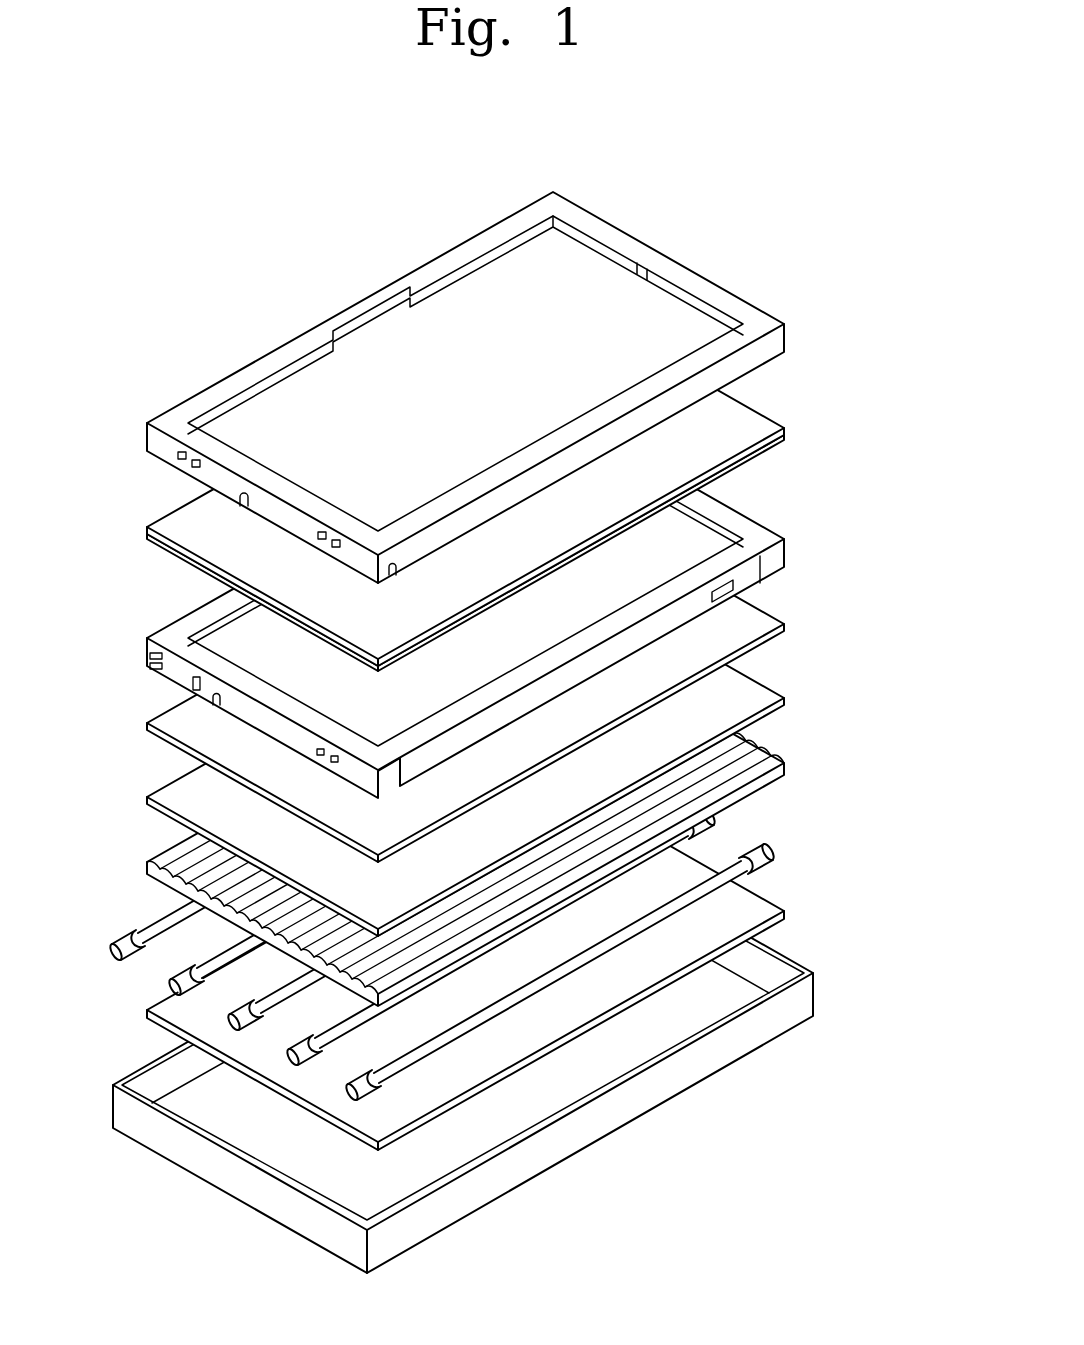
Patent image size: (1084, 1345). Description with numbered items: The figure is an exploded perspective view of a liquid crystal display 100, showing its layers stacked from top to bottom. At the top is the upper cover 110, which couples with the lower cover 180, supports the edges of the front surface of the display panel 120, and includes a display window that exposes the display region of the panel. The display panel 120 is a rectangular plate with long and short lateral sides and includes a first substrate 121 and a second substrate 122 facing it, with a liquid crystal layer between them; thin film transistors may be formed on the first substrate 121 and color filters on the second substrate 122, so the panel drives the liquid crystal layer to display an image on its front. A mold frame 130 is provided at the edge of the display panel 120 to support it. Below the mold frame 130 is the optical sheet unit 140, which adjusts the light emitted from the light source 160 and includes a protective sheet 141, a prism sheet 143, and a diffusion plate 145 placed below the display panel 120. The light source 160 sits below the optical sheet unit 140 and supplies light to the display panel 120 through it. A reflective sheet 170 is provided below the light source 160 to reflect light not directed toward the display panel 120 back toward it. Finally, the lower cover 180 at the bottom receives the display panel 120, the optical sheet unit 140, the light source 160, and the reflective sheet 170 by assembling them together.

The liquid crystal display 100 is at (392, 236).
The upper cover 110 is at (752, 356).
The display panel 120 is at (547, 483).
The first substrate 121 is at (752, 462).
The second substrate 122 is at (752, 438).
The mold frame 130 is at (752, 550).
The optical sheet unit 140 is at (547, 749).
The protective sheet 141 is at (886, 792).
The prism sheet 143 is at (752, 702).
The diffusion plate 145 is at (752, 770).
The light source 160 is at (158, 933).
The reflective sheet 170 is at (752, 914).
The lower cover 180 is at (588, 1066).